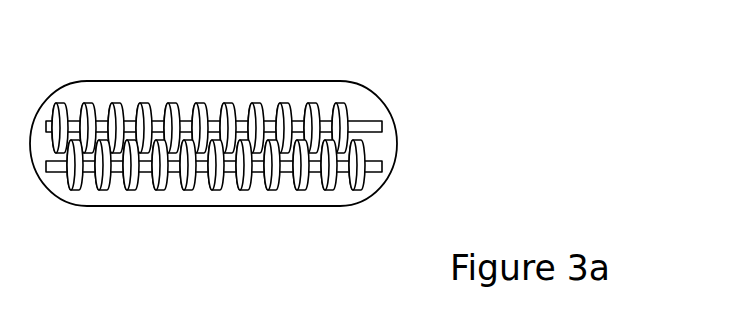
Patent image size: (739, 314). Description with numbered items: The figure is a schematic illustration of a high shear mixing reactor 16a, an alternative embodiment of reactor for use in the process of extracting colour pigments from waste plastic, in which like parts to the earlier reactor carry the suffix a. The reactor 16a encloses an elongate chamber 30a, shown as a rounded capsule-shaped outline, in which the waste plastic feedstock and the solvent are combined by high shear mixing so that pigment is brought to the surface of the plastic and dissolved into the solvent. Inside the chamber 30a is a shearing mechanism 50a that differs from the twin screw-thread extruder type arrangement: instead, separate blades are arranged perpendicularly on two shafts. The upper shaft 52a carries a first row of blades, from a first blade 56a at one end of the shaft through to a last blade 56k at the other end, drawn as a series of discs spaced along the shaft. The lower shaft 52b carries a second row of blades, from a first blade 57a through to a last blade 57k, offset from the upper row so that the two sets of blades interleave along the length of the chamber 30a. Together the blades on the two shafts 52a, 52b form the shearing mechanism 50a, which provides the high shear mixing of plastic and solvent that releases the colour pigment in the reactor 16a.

The reactor 16a is at (247, 144).
The chamber 30a is at (255, 203).
The shearing mechanism 50a is at (249, 95).
The shaft 52a is at (384, 124).
The shaft 52b is at (384, 167).
The blade 56a is at (65, 102).
The blade 56k is at (340, 103).
The blade 57a is at (75, 190).
The blade 57k is at (357, 191).